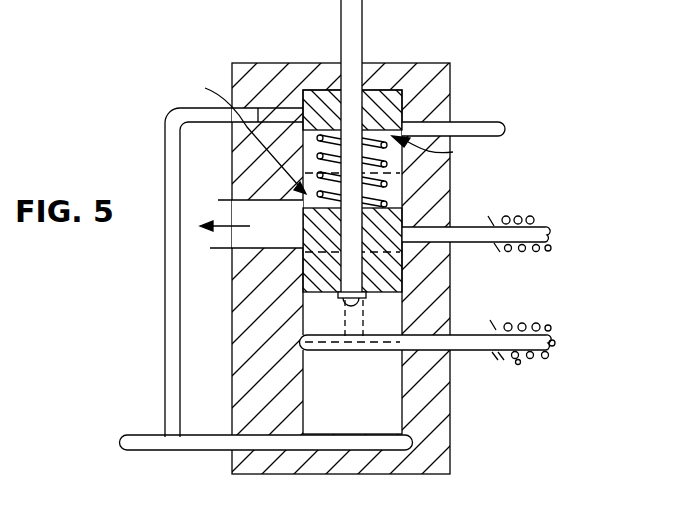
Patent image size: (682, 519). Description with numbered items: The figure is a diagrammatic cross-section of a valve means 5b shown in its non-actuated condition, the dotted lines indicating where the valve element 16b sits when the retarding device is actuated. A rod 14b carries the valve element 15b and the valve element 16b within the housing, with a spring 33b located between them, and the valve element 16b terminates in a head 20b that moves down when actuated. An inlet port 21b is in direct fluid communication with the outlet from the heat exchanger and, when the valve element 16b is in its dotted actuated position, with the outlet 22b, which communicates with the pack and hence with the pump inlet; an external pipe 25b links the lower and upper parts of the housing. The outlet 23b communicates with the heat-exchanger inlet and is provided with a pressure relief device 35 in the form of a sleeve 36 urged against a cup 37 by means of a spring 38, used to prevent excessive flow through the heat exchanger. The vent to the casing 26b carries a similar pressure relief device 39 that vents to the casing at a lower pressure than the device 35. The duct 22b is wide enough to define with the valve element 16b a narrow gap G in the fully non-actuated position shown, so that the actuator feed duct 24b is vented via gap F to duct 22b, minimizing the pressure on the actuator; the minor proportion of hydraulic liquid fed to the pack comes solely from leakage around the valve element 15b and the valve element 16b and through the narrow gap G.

The valve means 5b is at (448, 70).
The piston rod 14b is at (363, 24).
The valve element 15b is at (392, 103).
The valve element 16b is at (390, 222).
The spring 33b is at (312, 100).
The actuator feed duct 24b is at (488, 127).
The vent to the casing 26b is at (486, 238).
The outlet 23b is at (462, 337).
The inlet port 21b is at (128, 458).
The bypass pipe 25b is at (165, 260).
The outlet 22b is at (213, 210).
The valve head 20b is at (343, 296).
The gap F is at (432, 152).
The narrow gap G is at (246, 133).
The pressure relief device 39 is at (536, 220).
The pressure relief device 35 is at (527, 310).
The sleeve 36 is at (552, 343).
The cup 37 is at (492, 357).
The spring 38 is at (518, 366).